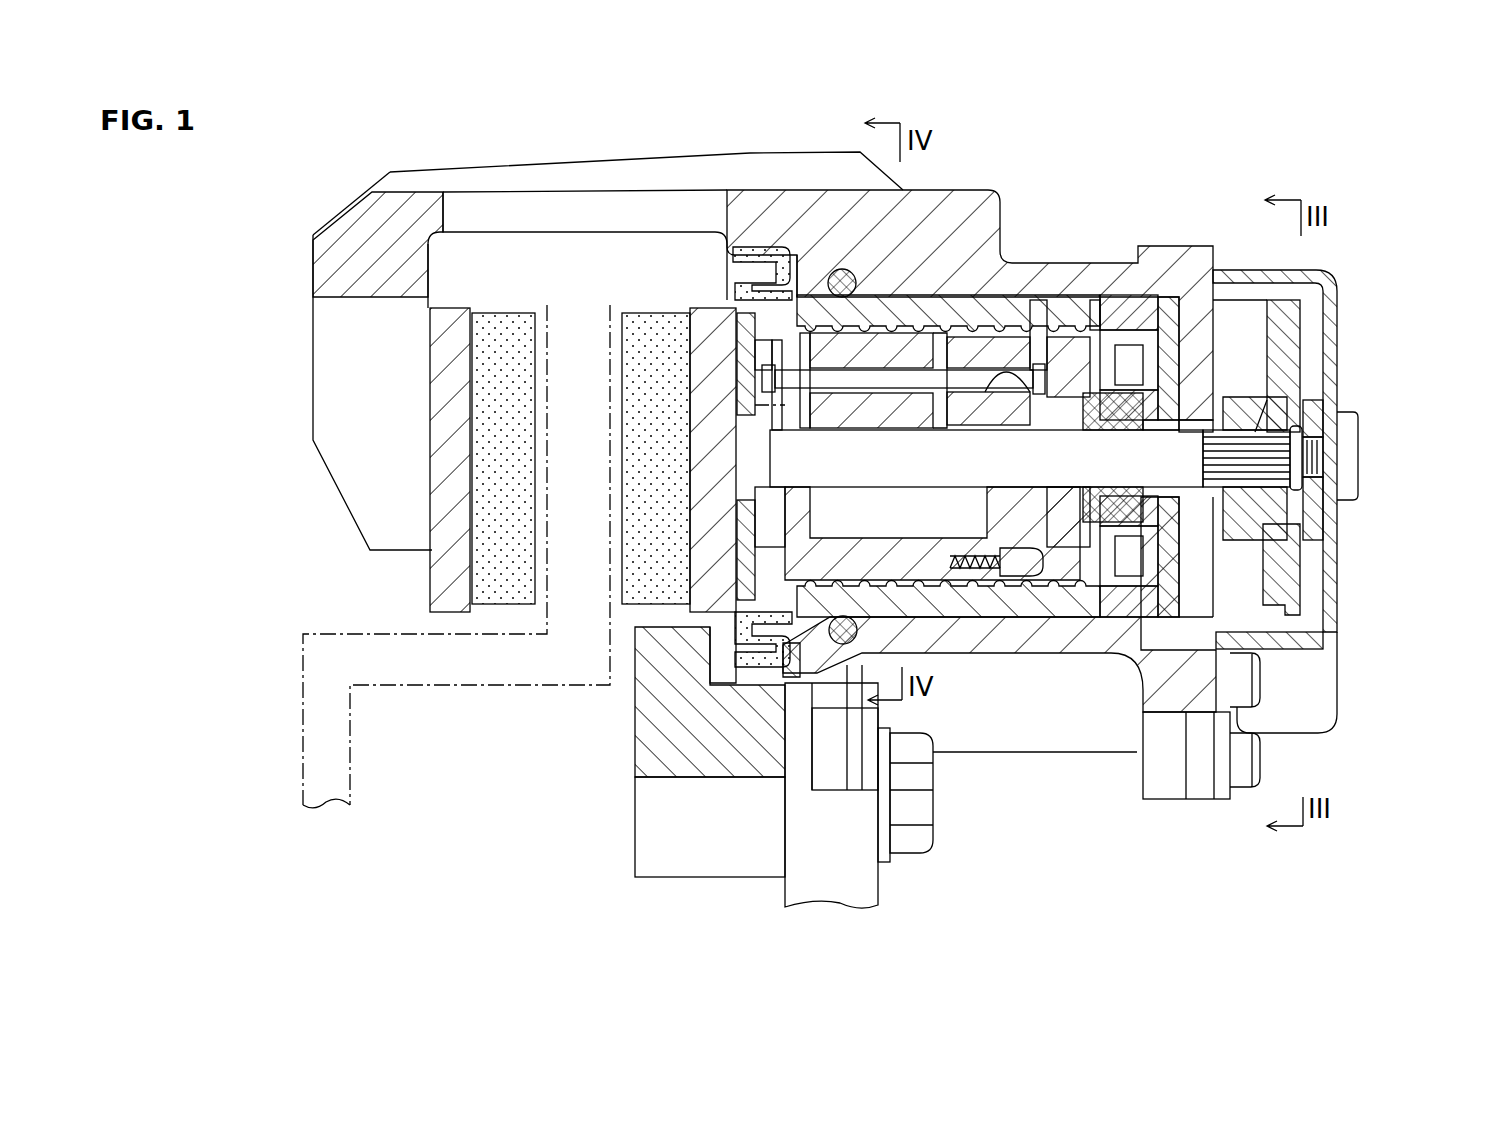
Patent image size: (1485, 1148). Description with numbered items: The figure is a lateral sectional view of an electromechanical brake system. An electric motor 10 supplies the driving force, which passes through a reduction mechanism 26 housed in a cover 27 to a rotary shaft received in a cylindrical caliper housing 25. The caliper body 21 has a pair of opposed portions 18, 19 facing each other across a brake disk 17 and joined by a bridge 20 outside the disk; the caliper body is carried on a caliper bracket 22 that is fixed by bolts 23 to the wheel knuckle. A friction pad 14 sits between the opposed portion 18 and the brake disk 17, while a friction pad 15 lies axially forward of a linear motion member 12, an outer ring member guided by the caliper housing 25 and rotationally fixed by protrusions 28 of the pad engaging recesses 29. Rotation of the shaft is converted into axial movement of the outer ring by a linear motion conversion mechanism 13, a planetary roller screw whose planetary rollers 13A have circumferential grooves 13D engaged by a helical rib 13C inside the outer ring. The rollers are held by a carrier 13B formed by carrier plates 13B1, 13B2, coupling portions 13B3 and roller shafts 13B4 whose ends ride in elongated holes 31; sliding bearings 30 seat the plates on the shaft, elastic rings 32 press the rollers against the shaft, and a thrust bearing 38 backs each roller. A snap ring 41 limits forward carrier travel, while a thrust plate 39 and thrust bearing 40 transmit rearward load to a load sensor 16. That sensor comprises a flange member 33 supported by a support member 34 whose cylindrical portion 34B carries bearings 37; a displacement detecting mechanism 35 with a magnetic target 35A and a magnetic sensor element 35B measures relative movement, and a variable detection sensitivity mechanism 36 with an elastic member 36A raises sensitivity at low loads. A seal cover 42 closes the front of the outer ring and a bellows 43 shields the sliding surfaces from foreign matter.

The electric motor 10 is at (1093, 745).
The linear motion member 12 is at (1040, 400).
The linear motion conversion mechanism 13 is at (955, 290).
The planetary rollers 13A is at (812, 298).
The carrier 13B is at (967, 582).
The carrier plate 13B1 is at (797, 397).
The carrier plate 13B2 is at (975, 430).
The coupling portions 13B3 is at (923, 578).
The roller shafts 13B4 is at (848, 300).
The helical rib 13C is at (880, 300).
The circumferential grooves 13D is at (883, 424).
The friction pad 14 is at (497, 325).
The friction pad 15 is at (645, 325).
The load sensor 16 is at (1188, 300).
The brake disk 17 is at (458, 690).
The opposed portion 18 is at (355, 230).
The opposed portion 19 is at (948, 207).
The bridge 20 is at (495, 205).
The caliper body 21 is at (565, 160).
The caliper bracket 22 is at (645, 735).
The bolts 23 is at (920, 795).
The caliper housing 25 is at (947, 250).
The reduction mechanism 26 is at (1300, 360).
The cover 27 is at (1345, 283).
The protrusions 28 is at (770, 358).
The recesses 29 is at (770, 405).
The sliding bearings 30 is at (1015, 397).
The elongated holes 31 is at (943, 402).
The elastic rings 32 is at (745, 340).
The flange member 33 is at (1130, 350).
The support member 34 is at (1215, 300).
The cylindrical portion 34B is at (1110, 410).
The displacement detecting mechanism 35 is at (1095, 415).
The magnetic target 35A is at (1290, 415).
The magnetic sensor element 35B is at (1140, 425).
The variable detection sensitivity mechanism 36 is at (1300, 340).
The elastic member 36A is at (1290, 322).
The bearings 37 is at (1080, 620).
The thrust bearing 38 is at (1040, 350).
The thrust plate 39 is at (1085, 370).
The thrust bearing 40 is at (1285, 385).
The snap ring 41 is at (745, 433).
The seal cover 42 is at (745, 490).
The bellows 43 is at (770, 625).